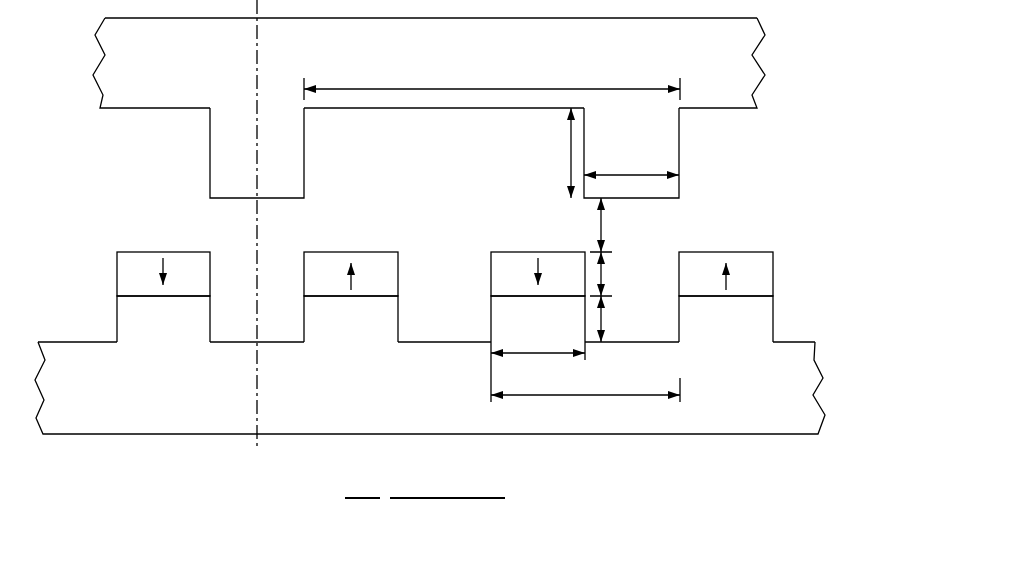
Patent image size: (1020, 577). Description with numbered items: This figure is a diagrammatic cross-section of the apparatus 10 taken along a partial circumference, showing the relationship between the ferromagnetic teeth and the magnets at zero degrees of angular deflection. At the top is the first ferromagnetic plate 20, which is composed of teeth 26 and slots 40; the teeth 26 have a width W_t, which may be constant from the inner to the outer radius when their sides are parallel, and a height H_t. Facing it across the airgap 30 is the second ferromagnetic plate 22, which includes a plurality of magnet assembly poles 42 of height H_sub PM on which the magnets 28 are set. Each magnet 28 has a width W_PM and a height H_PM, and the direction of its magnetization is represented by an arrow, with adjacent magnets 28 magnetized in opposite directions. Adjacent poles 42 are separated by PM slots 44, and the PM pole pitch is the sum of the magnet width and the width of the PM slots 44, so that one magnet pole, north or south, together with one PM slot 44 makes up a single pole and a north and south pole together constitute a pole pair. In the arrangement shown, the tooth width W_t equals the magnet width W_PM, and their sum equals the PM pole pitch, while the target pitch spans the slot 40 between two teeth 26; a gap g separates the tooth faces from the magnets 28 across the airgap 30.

The apparatus 10 is at (452, 270).
The first ferromagnetic plate 20 is at (478, 108).
The second ferromagnetic plate 22 is at (830, 393).
The teeth 26 is at (210, 152).
The magnets 28 is at (117, 272).
The airgap 30 is at (452, 348).
The slots 40 is at (464, 171).
The magnet assembly poles 42 is at (117, 325).
The PM slots 44 is at (246, 328).